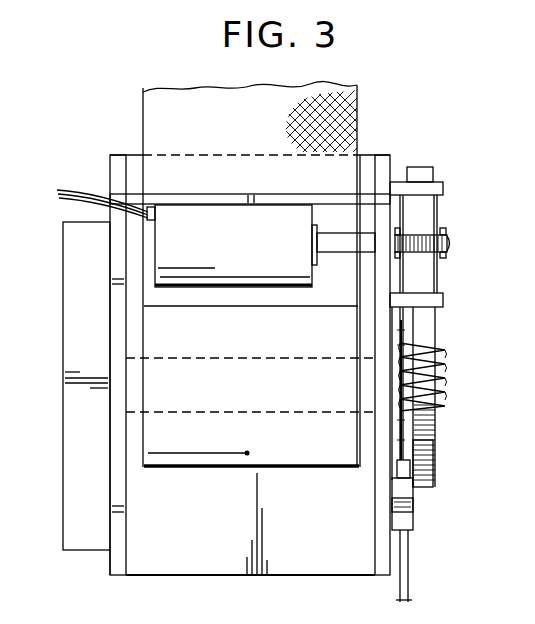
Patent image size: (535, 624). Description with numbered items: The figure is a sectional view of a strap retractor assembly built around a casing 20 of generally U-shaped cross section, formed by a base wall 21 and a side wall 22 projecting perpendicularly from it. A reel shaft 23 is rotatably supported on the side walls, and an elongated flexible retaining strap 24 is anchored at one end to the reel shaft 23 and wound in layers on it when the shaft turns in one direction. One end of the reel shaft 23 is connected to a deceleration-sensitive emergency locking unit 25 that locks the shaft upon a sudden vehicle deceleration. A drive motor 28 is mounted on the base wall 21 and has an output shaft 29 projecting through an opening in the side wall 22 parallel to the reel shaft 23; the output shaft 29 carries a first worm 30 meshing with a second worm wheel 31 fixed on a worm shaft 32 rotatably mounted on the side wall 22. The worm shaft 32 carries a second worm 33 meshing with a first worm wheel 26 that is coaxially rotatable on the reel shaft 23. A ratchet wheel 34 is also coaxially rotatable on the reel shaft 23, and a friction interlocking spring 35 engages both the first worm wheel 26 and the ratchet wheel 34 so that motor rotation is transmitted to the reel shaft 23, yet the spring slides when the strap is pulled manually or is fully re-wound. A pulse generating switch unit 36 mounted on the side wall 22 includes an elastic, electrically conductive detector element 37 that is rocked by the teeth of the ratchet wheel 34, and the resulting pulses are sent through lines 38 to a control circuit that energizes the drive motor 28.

The casing 20 is at (180, 577).
The base wall 21 is at (228, 529).
The side wall 22 is at (112, 563).
The reel shaft 23 is at (132, 413).
The retaining strap 24 is at (358, 113).
The emergency locking unit 25 is at (63, 365).
The first worm wheel 26 is at (436, 440).
The drive motor 28 is at (220, 255).
The output shaft 29 is at (337, 256).
The first worm 30 is at (448, 238).
The second worm wheel 31 is at (427, 232).
The worm shaft 32 is at (443, 289).
The second worm 33 is at (447, 373).
The ratchet wheel 34 is at (392, 450).
The friction interlocking spring 35 is at (411, 468).
The pulse generating switch unit 36 is at (414, 519).
The detector element 37 is at (434, 478).
The lines 38 is at (100, 200).